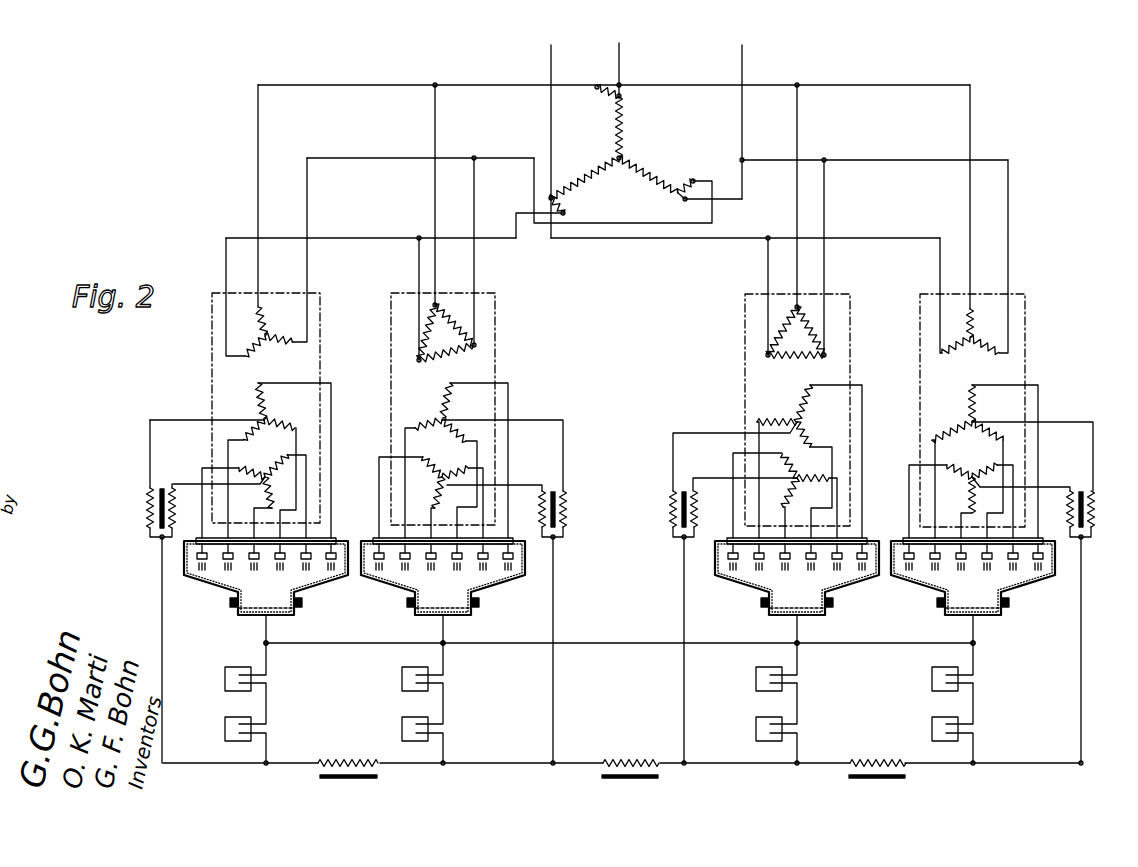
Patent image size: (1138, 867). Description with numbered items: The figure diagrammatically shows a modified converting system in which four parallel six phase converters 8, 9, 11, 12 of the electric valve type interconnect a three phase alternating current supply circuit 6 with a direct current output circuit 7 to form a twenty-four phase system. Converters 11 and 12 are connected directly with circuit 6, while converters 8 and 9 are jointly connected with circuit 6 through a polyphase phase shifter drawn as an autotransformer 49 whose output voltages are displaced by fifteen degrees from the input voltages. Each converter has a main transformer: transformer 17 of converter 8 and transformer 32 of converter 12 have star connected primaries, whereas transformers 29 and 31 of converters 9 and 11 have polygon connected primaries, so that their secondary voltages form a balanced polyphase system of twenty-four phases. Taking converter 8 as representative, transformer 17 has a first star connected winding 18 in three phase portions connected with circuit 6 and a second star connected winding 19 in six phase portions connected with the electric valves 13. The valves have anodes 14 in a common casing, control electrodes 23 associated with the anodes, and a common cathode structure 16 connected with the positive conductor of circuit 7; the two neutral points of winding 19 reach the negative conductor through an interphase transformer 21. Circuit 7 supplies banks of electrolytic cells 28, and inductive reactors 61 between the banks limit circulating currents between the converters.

The polyphase alternating current circuit 6 is at (747, 51).
The autotransformer 49 is at (645, 166).
The main transformer 17 is at (212, 348).
The first star connected winding 18 is at (266, 312).
The main transformer 29 is at (391, 357).
The main transformer 31 is at (745, 348).
The main transformer 32 is at (921, 349).
The converter 8 is at (248, 572).
The converter 9 is at (533, 466).
The converter 11 is at (721, 468).
The converter 12 is at (1064, 470).
The second star connected winding 19 is at (255, 433).
The interphase transformer 21 is at (163, 488).
The anodes 14 is at (197, 558).
The electric valves 13 is at (333, 579).
The control electrodes 23 is at (205, 576).
The common cathode structure 16 is at (256, 613).
The direct current circuit 7 is at (524, 763).
The inductive reactors 61 is at (892, 777).
The electrolytic cells 28 is at (932, 724).